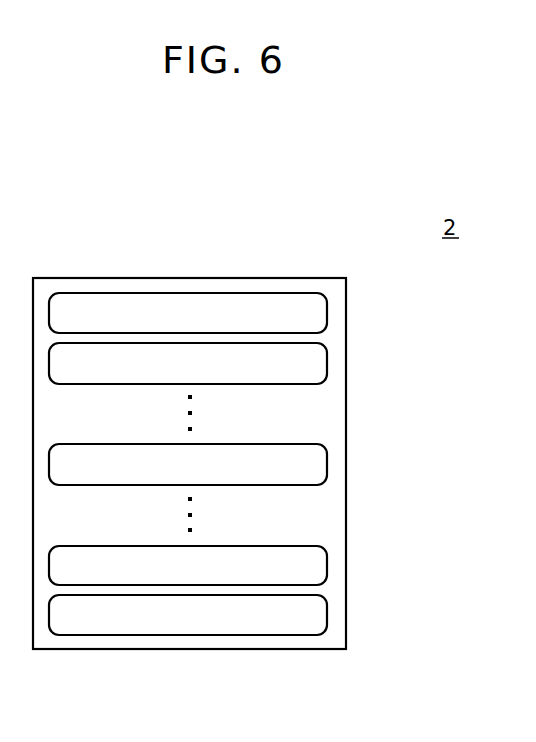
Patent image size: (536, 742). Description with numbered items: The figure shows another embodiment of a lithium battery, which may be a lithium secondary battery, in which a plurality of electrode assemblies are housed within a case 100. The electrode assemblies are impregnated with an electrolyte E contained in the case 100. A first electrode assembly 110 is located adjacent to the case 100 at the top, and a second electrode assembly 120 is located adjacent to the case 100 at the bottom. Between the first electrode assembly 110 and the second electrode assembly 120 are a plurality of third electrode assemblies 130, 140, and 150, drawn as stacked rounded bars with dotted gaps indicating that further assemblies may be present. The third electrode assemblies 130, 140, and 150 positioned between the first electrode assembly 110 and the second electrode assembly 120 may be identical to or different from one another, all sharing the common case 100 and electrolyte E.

The case 100 is at (188, 277).
The first electrode assembly 110 is at (327, 312).
The second electrode assembly 120 is at (327, 613).
The third electrode assembly 130 is at (327, 463).
The third electrode assembly 140 is at (327, 362).
The third electrode assembly 150 is at (327, 565).
The electrolyte E is at (187, 645).